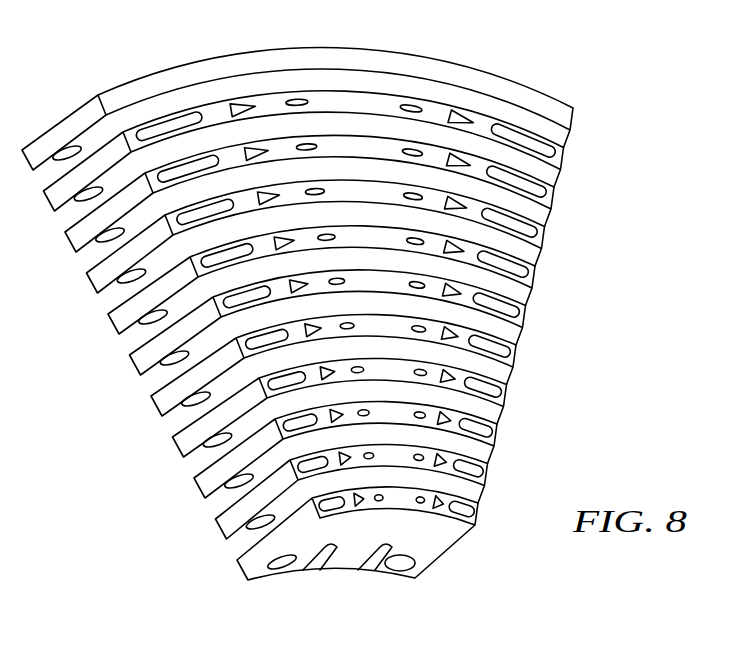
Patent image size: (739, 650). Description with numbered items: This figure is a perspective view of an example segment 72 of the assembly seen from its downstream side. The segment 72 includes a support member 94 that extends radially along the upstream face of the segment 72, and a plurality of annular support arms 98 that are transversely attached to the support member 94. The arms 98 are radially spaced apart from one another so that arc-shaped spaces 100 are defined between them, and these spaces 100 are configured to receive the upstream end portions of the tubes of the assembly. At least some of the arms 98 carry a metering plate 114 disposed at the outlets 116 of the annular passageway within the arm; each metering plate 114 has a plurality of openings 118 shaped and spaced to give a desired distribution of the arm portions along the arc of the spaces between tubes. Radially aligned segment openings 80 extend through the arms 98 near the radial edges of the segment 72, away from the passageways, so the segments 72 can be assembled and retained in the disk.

The segment 72 is at (670, 147).
The annular support arms 98 is at (545, 242).
The arc-shaped spaces 100 is at (285, 86).
The metering plate 114 is at (470, 167).
The outlets 116 is at (187, 173).
The openings 118 is at (455, 118).
The segment openings 80 is at (290, 578).
The support member 94 is at (334, 562).